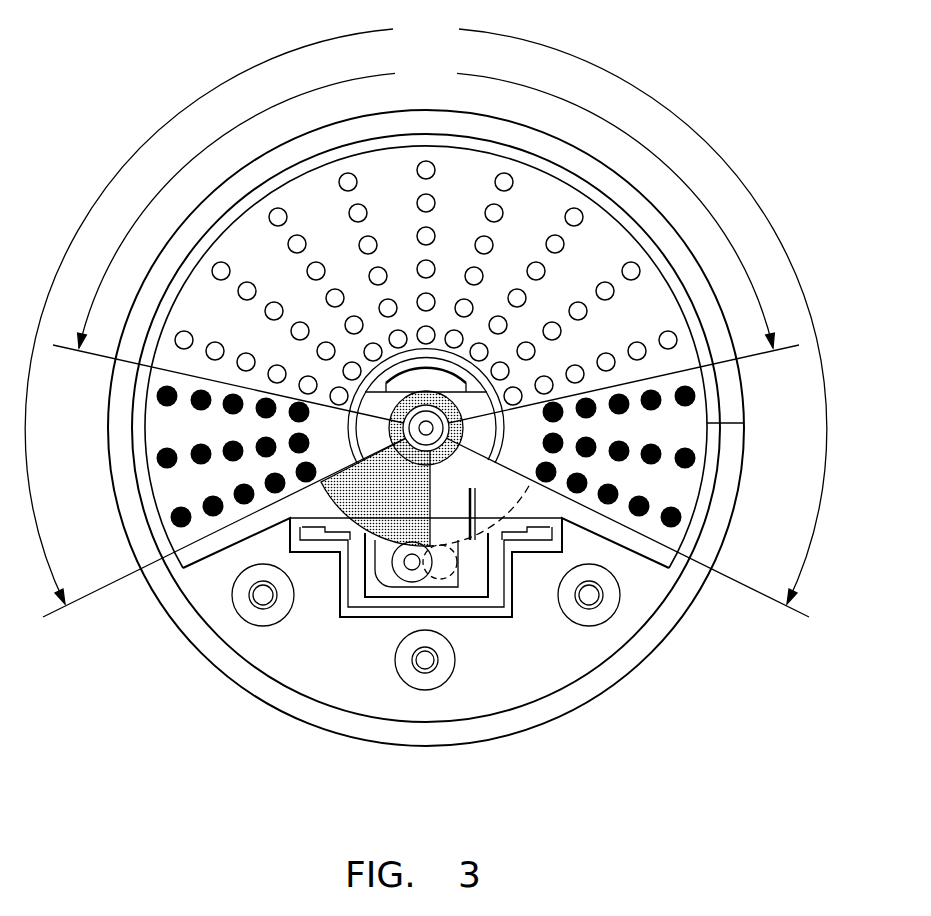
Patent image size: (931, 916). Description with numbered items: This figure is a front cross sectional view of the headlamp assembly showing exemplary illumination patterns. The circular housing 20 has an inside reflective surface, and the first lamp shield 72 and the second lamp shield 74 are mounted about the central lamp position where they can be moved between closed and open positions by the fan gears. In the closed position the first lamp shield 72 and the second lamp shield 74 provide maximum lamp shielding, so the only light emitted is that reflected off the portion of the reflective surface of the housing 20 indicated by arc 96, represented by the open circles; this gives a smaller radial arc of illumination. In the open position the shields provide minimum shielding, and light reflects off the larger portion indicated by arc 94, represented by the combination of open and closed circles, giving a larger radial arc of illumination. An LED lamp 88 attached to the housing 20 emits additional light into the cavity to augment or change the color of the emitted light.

The housing 20 is at (447, 205).
The first lamp shield 72 is at (412, 420).
The second lamp shield 74 is at (440, 420).
The LED lamp 88 is at (262, 595).
The arc 94 is at (426, 310).
The arc 96 is at (426, 204).